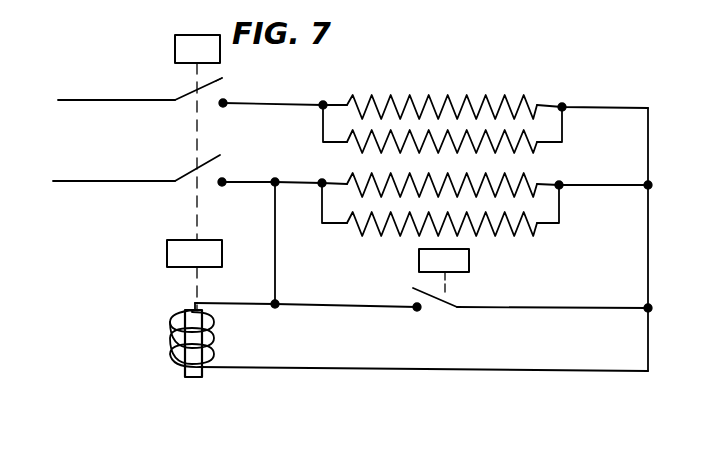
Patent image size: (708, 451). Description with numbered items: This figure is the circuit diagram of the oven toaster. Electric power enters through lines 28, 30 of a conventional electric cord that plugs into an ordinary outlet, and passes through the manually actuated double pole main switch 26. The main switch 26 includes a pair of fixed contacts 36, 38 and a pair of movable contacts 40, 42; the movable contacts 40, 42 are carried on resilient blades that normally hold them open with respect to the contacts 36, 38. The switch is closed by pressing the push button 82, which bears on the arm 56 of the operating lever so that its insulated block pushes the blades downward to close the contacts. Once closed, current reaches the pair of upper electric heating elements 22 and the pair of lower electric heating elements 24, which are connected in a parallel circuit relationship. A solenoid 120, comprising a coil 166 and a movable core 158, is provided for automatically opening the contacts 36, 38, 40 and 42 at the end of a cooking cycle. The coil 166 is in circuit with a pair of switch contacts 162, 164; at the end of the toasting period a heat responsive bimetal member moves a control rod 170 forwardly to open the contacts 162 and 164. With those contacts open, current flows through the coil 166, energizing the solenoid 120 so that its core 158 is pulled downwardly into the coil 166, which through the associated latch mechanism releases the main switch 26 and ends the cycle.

The electric heating elements 22 is at (521, 131).
The electric heating elements 24 is at (525, 192).
The double pole switch 26 is at (190, 92).
The line 28 is at (73, 100).
The line 30 is at (82, 181).
The contact 36 is at (225, 102).
The contact 38 is at (226, 178).
The movable contact 40 is at (218, 80).
The movable contact 42 is at (186, 177).
The arm 56 is at (194, 253).
The push button 82 is at (197, 172).
The solenoid 120 is at (207, 373).
The movable core 158 is at (190, 320).
The switch contact 162 is at (422, 285).
The switch contact 164 is at (412, 312).
The coil 166 is at (172, 352).
The control rod 170 is at (444, 272).